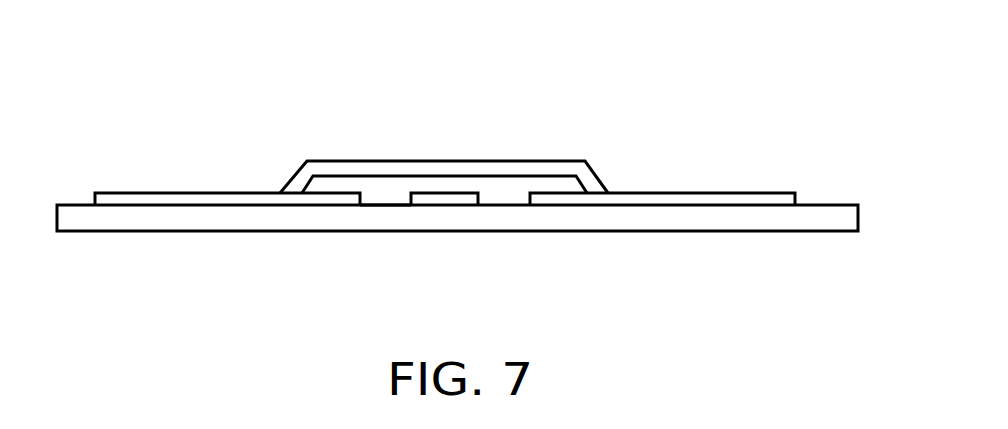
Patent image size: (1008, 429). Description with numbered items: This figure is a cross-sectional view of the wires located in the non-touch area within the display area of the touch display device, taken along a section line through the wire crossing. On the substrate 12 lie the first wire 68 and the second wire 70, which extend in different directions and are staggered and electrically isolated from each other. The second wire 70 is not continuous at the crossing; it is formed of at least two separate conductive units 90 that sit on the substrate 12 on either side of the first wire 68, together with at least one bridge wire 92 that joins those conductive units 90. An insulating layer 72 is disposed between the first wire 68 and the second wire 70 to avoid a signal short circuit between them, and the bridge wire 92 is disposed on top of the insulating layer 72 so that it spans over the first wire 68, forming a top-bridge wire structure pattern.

The substrate 12 is at (818, 223).
The first wire 68 is at (447, 197).
The second wire 70 is at (832, 3).
The insulating layer 72 is at (388, 197).
The separate conductive units 90 is at (127, 197).
The bridge wire 92 is at (505, 168).